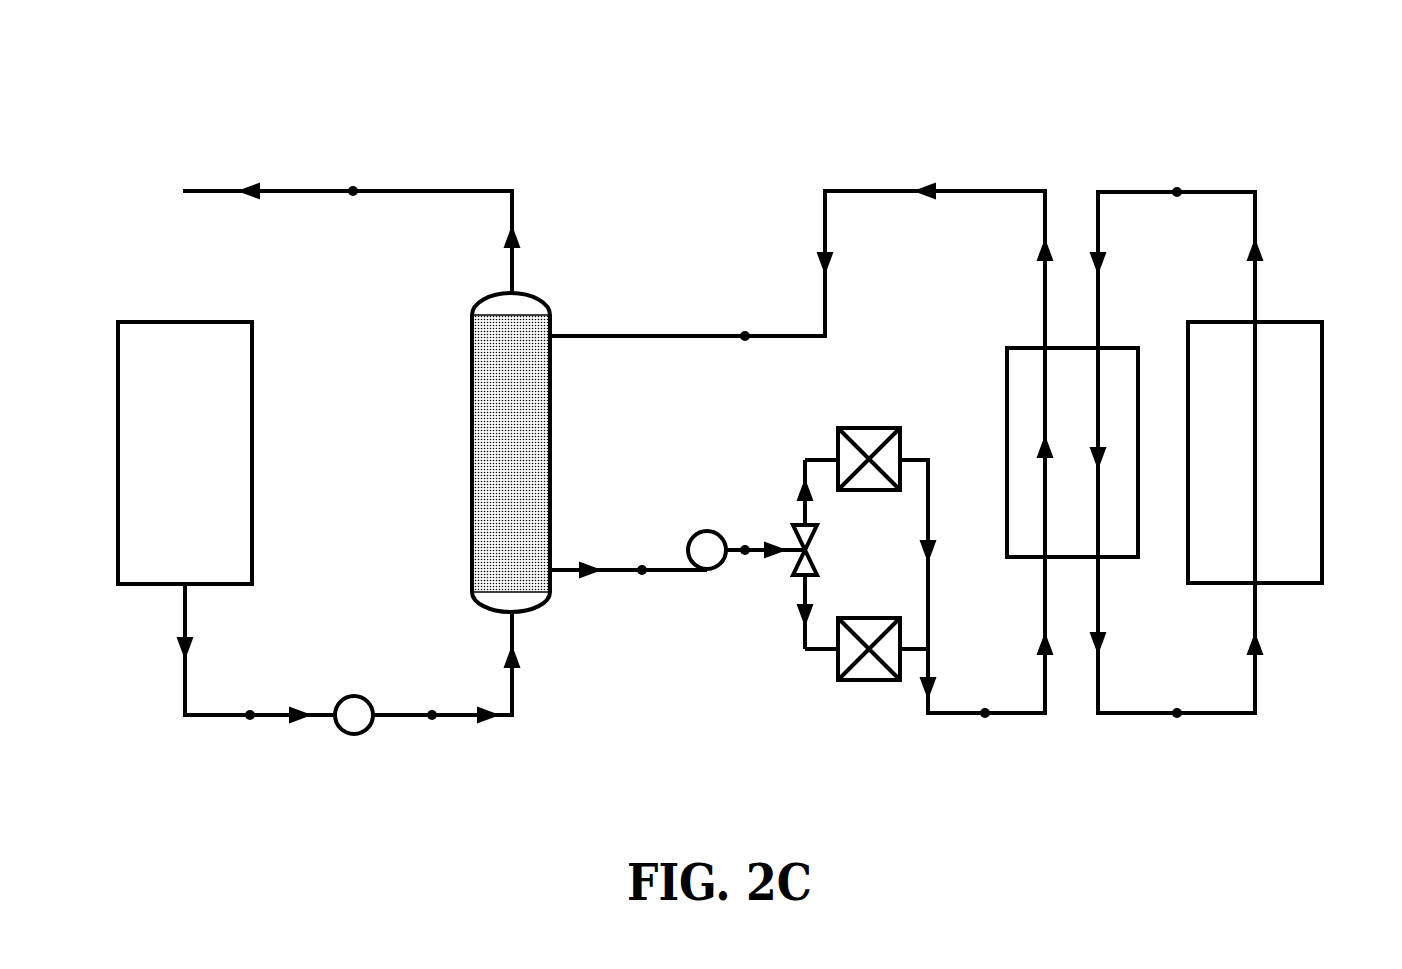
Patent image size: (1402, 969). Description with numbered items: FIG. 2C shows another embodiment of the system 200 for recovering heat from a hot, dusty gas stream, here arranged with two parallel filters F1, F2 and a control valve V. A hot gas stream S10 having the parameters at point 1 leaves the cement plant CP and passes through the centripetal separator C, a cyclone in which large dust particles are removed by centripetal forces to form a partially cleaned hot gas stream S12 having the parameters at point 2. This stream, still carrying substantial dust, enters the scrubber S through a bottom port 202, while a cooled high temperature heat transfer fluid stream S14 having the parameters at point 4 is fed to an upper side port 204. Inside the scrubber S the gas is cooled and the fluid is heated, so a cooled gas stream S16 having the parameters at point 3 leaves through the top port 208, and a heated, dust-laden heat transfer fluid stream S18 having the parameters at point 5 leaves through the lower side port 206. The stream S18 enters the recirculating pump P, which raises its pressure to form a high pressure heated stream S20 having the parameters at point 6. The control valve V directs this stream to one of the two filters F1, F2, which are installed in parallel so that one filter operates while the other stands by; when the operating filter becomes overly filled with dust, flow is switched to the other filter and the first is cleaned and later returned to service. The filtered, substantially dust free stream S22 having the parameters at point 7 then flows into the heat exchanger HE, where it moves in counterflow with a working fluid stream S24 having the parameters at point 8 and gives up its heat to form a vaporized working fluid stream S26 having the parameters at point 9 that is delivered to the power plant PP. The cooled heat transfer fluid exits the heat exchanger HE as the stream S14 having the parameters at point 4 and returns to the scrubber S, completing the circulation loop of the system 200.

The system 200 is at (745, 160).
The column bottom inlet 202 is at (520, 613).
The column upper side outlet 204 is at (552, 343).
The column lower side outlet 206 is at (552, 548).
The column top outlet 208 is at (517, 292).
The hot gas stream S10 is at (227, 718).
The partially cleaned hot gas stream S12 is at (462, 718).
The cooled high temperature heat transfer fluid stream S14 is at (633, 333).
The cooled gas stream S16 is at (383, 193).
The heated high temperature heat transfer fluid stream S18 is at (673, 573).
The high pressure, heated high temperature heat transfer fluid stream S20 is at (760, 543).
The substantially dust free, high pressure, heated high temperature heat transfer fl S22 is at (1023, 718).
The working fluid stream S24 is at (1215, 190).
The vaporized working fluid stream S26 is at (1213, 718).
The point 1 is at (249, 736).
The point 2 is at (432, 736).
The point 3 is at (353, 176).
The point 4 is at (745, 319).
The point 5 is at (642, 589).
The point 6 is at (745, 569).
The point 7 is at (985, 731).
The point 8 is at (1177, 174).
The point 9 is at (1177, 731).
The cement plant CP is at (211, 453).
The centripetal separator C is at (354, 740).
The scrubber S is at (573, 451).
The recirculating pump P is at (707, 530).
The control valve V is at (865, 554).
The filter F1 is at (869, 441).
The filter F2 is at (869, 671).
The heat exchanger HE is at (1041, 452).
The power plant PP is at (1283, 452).